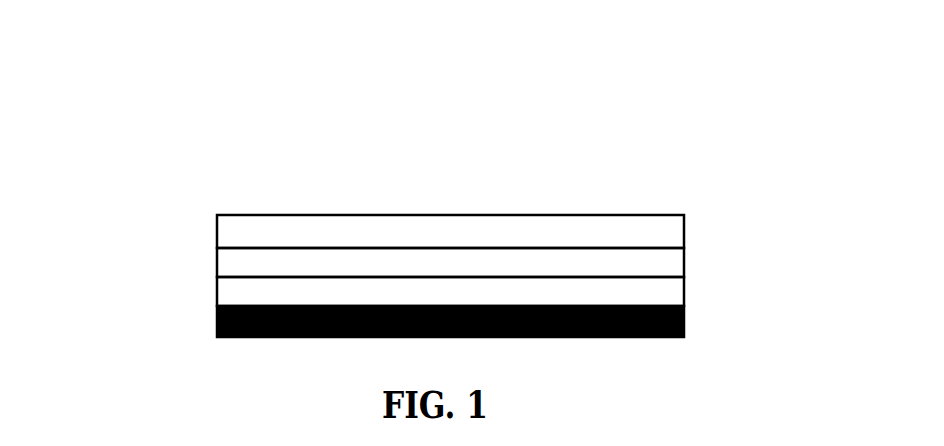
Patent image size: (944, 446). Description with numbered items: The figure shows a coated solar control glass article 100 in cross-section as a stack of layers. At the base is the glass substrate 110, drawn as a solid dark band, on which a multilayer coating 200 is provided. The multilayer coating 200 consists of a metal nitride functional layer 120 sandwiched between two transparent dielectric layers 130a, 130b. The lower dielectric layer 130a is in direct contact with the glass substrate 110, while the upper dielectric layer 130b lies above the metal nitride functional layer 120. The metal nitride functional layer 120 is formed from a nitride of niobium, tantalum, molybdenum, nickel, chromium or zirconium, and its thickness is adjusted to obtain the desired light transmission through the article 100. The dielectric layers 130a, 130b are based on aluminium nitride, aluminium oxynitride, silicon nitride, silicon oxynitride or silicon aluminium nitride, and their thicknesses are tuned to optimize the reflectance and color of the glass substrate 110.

The coated solar control glass article 100 is at (355, 17).
The glass substrate 110 is at (684, 327).
The metal nitride functional layer 120 is at (217, 263).
The transparent dielectric layer 130a is at (684, 287).
The transparent dielectric layer 130b is at (684, 240).
The multilayer coating 200 is at (449, 251).